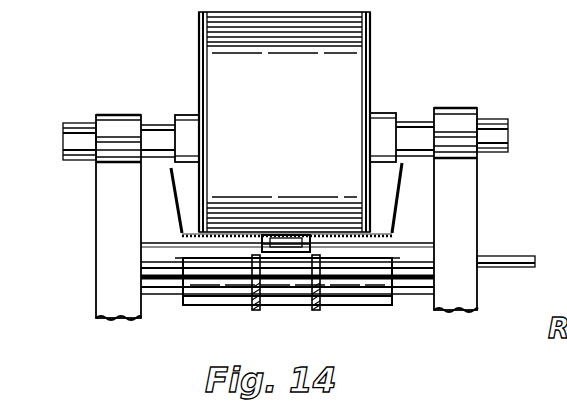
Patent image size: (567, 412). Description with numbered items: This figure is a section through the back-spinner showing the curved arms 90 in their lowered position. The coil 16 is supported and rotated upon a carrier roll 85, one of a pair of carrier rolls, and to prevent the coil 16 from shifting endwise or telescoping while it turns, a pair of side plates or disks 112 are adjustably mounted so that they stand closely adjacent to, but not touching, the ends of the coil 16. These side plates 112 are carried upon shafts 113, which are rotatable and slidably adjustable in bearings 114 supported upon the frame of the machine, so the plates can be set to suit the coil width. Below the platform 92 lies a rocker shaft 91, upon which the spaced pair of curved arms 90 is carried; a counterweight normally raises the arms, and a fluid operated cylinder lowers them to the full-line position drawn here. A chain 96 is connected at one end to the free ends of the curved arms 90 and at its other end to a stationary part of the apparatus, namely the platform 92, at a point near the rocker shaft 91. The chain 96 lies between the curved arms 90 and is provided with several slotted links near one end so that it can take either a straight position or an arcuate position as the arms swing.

The drum 16 is at (373, 40).
The side plates or disks 112 is at (200, 62).
The shafts 113 is at (81, 137).
The bearings 114 is at (115, 160).
The platform 92 is at (330, 232).
The chain 96 is at (283, 240).
The rocker shaft 91 is at (500, 265).
The carrier roll 85 is at (372, 285).
The curved arms 90 is at (316, 310).